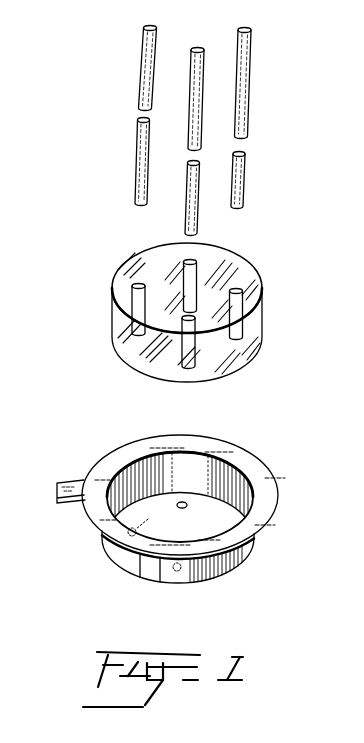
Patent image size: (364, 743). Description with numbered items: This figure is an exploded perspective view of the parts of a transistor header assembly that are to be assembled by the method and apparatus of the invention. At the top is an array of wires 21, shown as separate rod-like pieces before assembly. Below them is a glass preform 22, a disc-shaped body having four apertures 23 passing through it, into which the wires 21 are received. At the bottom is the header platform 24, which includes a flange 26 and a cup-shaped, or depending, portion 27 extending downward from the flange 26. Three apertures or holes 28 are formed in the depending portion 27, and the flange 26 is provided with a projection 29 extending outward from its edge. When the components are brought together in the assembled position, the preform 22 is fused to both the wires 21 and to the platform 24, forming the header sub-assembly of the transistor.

The wires 21 is at (146, 64).
The glass preform 22 is at (270, 316).
The apertures 23 is at (238, 289).
The header platform 24 is at (278, 478).
The flange 26 is at (270, 520).
The cup-shaped portion 27 is at (243, 562).
The holes 28 is at (178, 507).
The projection 29 is at (57, 490).